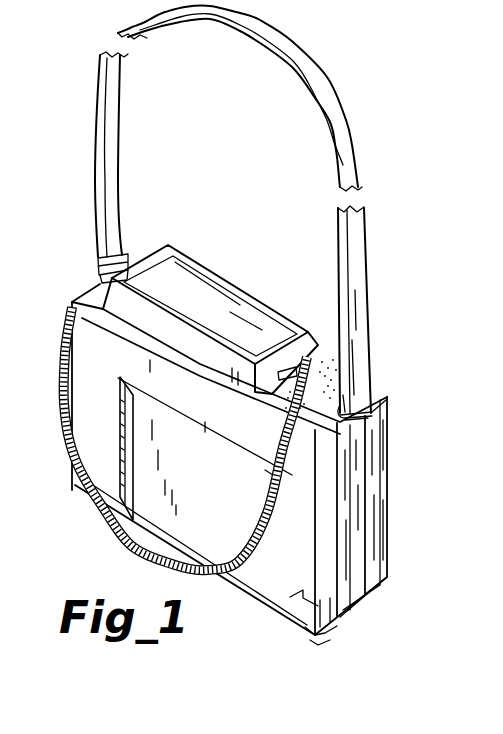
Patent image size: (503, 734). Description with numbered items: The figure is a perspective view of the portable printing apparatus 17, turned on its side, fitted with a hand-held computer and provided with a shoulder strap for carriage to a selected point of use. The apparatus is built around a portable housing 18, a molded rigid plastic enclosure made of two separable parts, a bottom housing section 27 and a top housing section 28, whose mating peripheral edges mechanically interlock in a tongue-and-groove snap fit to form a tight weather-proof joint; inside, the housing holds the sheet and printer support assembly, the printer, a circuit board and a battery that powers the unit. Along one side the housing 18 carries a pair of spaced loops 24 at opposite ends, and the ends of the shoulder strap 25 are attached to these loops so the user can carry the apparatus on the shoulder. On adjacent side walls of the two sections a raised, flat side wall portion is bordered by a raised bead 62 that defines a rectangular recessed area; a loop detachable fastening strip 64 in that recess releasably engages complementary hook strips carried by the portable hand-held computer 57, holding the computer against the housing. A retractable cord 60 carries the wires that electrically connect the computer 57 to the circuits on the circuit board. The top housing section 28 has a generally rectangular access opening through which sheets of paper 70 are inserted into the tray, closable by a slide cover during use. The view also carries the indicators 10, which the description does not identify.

The portable cooler apparatus 10 is at (267, 617).
The portable printing apparatus 17 is at (420, 391).
The portable housing 18 is at (397, 472).
The spaced loops 24 is at (377, 398).
The shoulder strap 25 is at (338, 109).
The bottom housing section 27 is at (387, 577).
The top housing section 28 is at (334, 628).
The portable hand-held computer 57 is at (222, 282).
The retractable cord 60 is at (117, 543).
The raised bead 62 is at (300, 169).
The loop detachable fastening strip 64 is at (327, 350).
The sheets of paper 70 is at (135, 468).